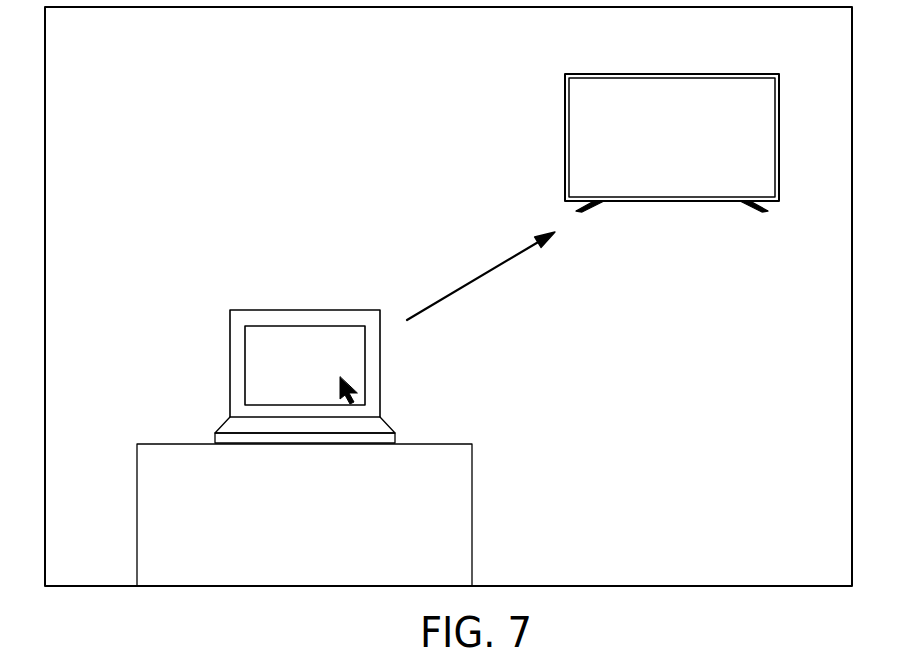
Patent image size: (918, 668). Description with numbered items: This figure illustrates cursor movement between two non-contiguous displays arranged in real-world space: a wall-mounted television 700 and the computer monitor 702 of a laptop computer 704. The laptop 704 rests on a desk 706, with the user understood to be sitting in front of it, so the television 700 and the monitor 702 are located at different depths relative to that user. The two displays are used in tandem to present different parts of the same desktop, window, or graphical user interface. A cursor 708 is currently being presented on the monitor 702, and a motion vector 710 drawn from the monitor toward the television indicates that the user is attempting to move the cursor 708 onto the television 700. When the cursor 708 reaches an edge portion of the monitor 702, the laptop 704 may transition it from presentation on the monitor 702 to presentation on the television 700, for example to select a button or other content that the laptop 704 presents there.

The wall-mounted television 700 is at (672, 72).
The computer monitor 702 is at (312, 338).
The laptop computer 704 is at (230, 391).
The desk 706 is at (473, 517).
The cursor 708 is at (358, 385).
The motion vector 710 is at (480, 275).